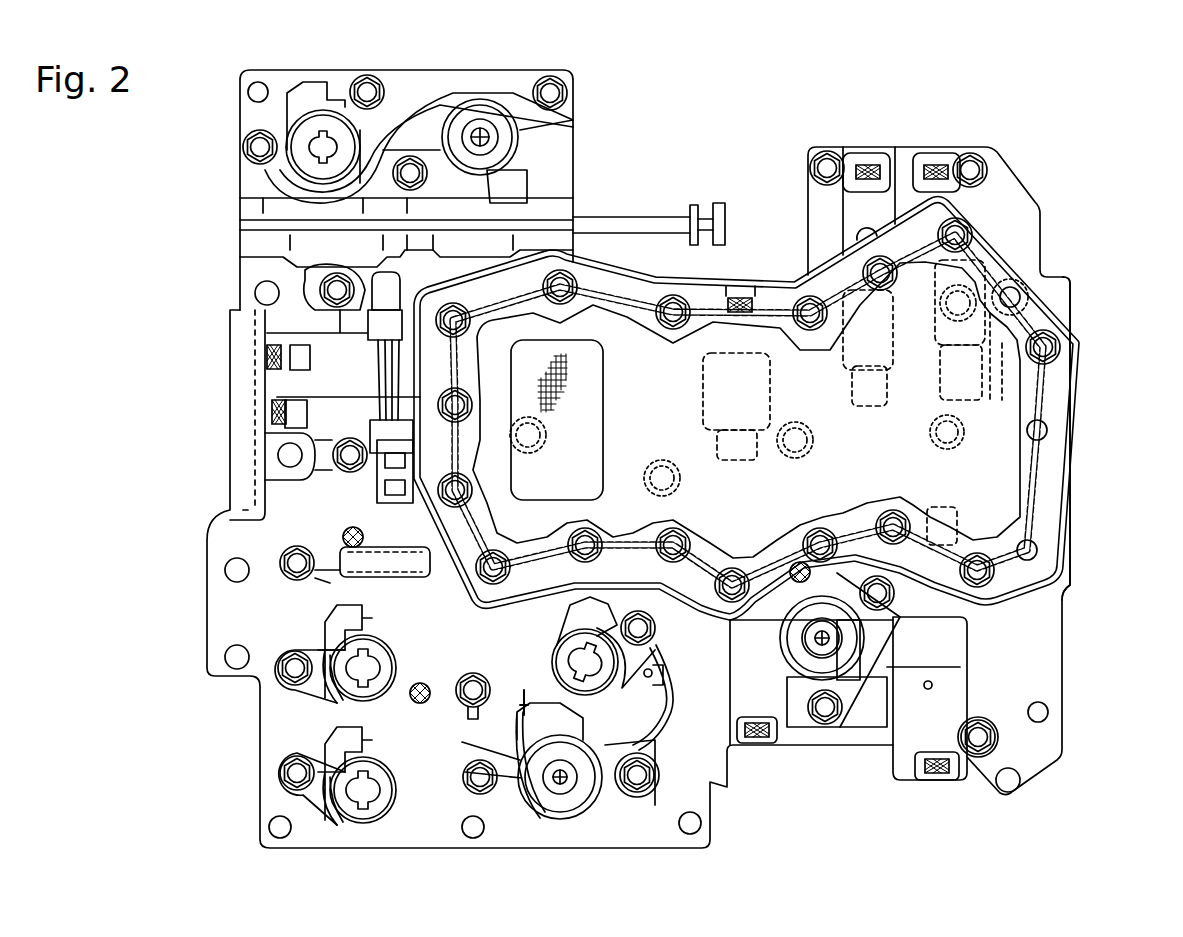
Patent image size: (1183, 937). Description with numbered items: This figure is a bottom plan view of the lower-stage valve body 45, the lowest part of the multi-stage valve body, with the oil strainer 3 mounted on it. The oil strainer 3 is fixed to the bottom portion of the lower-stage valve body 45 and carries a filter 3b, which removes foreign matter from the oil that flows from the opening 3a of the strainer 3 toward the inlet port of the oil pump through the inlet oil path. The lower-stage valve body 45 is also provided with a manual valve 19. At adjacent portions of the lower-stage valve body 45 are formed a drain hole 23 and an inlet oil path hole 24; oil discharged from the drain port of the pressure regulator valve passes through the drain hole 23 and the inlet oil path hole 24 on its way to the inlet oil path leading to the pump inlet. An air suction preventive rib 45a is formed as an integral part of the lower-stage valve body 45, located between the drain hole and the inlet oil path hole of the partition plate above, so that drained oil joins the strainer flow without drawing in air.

The manual valve 19 is at (606, 212).
The oil strainer 3 is at (742, 272).
The opening 3a is at (605, 453).
The filter 3b is at (557, 375).
The lower-stage valve body 45 is at (1012, 185).
The air suction preventive rib 45a is at (1000, 337).
The drain hole 23 is at (937, 382).
The inlet oil path hole 24 is at (1047, 393).